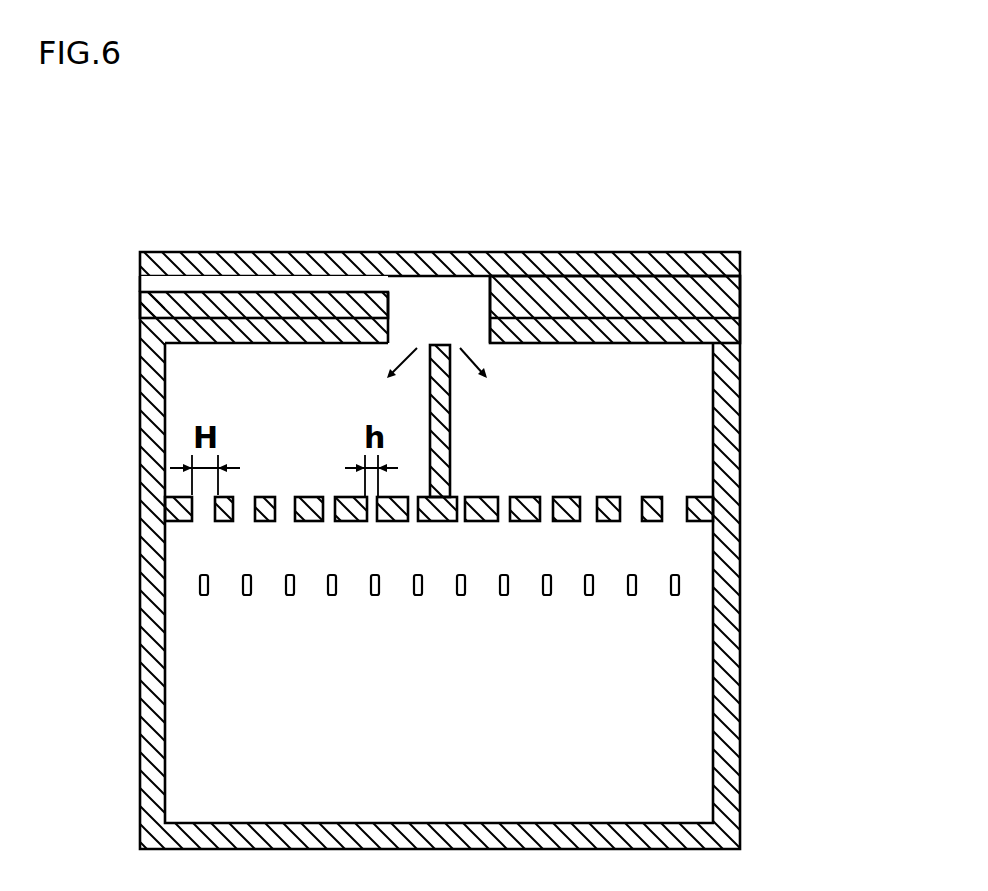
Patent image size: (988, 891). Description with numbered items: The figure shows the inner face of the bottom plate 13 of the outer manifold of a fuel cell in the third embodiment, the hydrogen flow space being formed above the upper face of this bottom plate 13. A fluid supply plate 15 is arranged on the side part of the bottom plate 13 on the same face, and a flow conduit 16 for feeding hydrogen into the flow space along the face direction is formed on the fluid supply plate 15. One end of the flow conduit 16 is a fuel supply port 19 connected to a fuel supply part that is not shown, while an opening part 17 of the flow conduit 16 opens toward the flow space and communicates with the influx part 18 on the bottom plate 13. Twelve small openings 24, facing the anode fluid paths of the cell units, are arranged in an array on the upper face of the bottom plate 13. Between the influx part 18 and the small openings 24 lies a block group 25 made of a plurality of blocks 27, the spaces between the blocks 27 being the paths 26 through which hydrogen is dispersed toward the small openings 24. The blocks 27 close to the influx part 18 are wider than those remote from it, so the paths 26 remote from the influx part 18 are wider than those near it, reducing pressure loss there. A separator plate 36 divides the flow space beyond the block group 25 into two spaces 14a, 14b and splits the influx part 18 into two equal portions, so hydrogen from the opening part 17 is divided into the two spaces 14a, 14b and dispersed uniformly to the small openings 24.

The bottom plate 13 is at (740, 735).
The space 14a is at (185, 381).
The space 14b is at (683, 370).
The fluid supply plate 15 is at (698, 252).
The flow conduit 16 is at (256, 290).
The opening part 17 is at (485, 292).
The influx part 18 is at (413, 332).
The fuel supply port 19 is at (140, 284).
The small openings 24 is at (680, 585).
The block group 25 is at (512, 471).
The paths 26 is at (627, 505).
The blocks 27 is at (573, 523).
The separator plate 36 is at (448, 423).